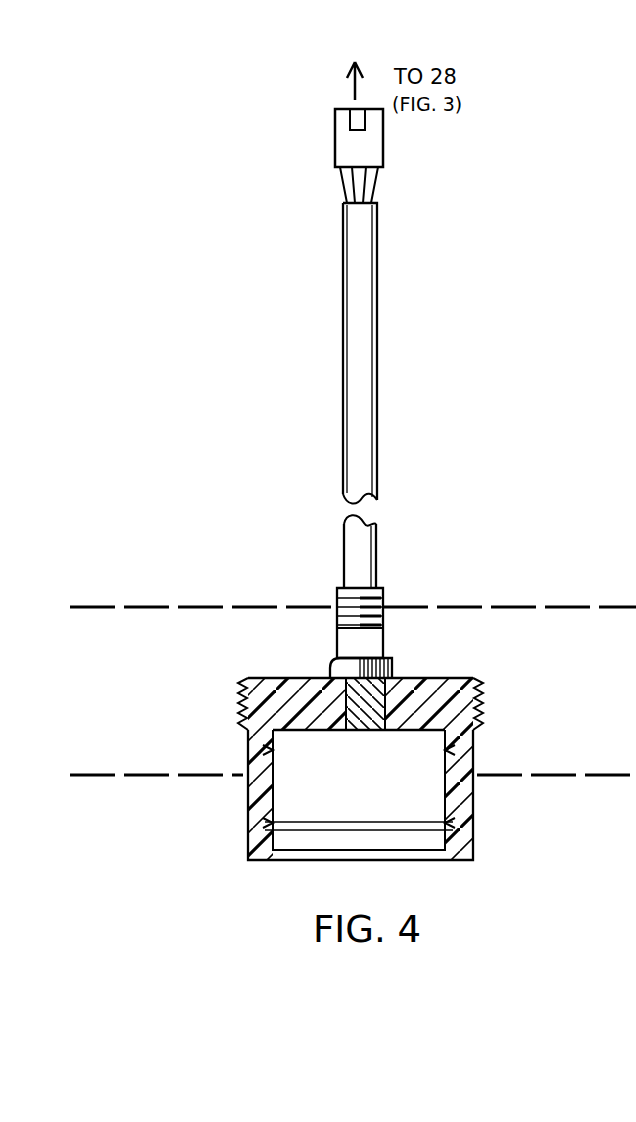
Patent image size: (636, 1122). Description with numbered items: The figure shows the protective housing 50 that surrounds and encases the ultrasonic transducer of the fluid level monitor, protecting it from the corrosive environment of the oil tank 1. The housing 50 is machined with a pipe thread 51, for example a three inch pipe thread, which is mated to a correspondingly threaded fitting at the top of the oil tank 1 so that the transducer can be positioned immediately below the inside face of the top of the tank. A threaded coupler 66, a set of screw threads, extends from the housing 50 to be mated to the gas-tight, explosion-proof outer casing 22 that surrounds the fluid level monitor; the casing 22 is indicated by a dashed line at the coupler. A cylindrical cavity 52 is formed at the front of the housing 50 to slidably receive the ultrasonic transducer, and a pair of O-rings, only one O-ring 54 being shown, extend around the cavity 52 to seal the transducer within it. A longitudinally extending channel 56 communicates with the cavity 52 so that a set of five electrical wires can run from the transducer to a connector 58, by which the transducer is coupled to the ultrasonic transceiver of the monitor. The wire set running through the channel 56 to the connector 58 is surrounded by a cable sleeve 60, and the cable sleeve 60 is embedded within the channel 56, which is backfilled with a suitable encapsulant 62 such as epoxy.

The tank 1 is at (108, 784).
The outer casing 22 is at (523, 598).
The protective housing 50 is at (353, 769).
The pipe thread 51 is at (480, 700).
The cylindrical cavity 52 is at (411, 769).
The O-ring 54 is at (377, 823).
The longitudinally extending channel 56 is at (410, 700).
The connector 58 is at (383, 137).
The cable sleeve 60 is at (356, 334).
The encapsulant 62 is at (343, 697).
The threaded coupler 66 is at (383, 596).